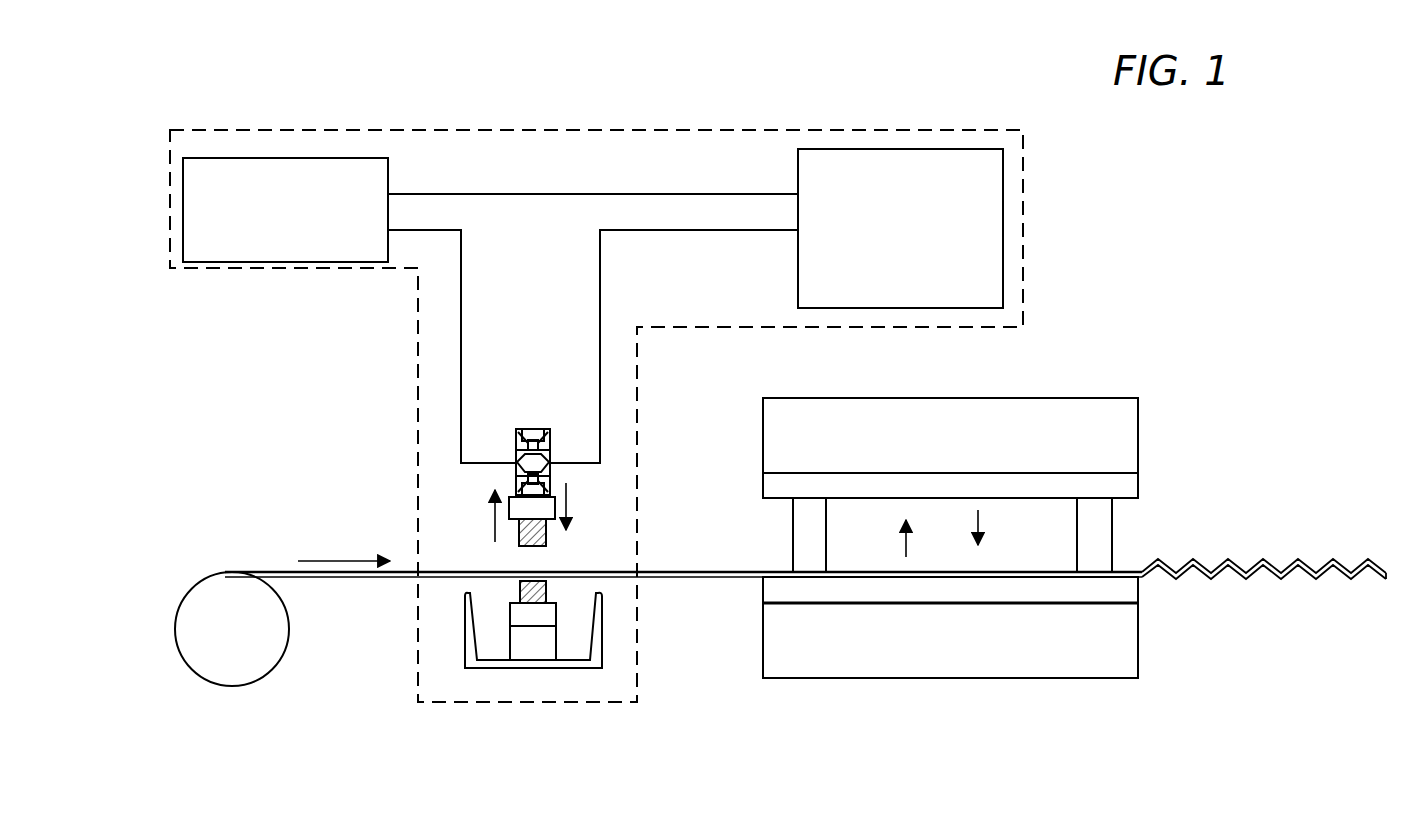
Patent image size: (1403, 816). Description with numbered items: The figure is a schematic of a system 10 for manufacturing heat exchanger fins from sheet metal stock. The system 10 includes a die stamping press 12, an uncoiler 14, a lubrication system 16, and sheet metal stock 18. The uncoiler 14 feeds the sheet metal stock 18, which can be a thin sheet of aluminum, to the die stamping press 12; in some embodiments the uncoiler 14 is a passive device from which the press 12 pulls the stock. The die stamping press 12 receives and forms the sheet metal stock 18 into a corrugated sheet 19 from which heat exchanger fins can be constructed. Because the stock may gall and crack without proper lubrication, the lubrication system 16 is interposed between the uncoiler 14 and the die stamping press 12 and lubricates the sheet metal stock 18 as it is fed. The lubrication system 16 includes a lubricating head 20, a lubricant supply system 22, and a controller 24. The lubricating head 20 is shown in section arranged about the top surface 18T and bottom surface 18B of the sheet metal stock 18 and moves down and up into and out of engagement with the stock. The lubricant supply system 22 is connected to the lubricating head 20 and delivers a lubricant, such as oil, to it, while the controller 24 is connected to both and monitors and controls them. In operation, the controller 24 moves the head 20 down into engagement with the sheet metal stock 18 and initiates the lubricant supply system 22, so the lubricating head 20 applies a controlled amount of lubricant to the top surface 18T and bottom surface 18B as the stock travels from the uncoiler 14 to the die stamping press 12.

The system 10 is at (1152, 203).
The die stamping press 12 is at (1050, 391).
The uncoiler 14 is at (232, 566).
The lubrication system 16 is at (840, 128).
The sheet metal stock 18 is at (390, 580).
The top surface 18T is at (700, 563).
The bottom surface 18B is at (700, 587).
The corrugated sheet 19 is at (1238, 565).
The lubricating head 20 is at (600, 602).
The lubricant supply system 22 is at (307, 262).
The controller 24 is at (908, 308).